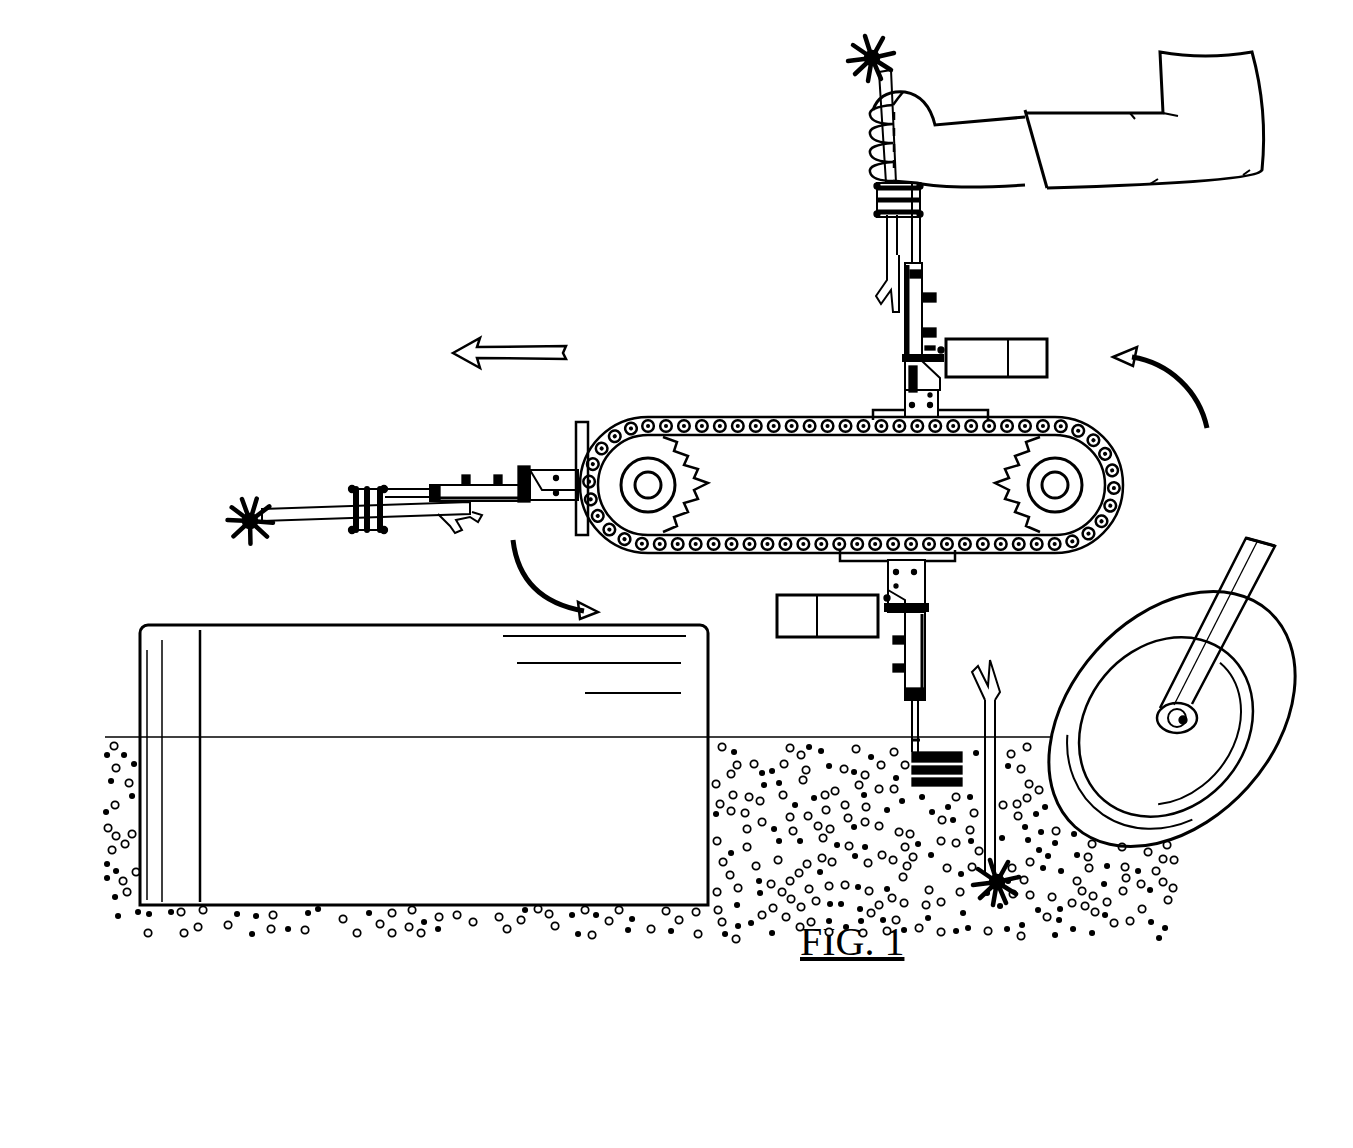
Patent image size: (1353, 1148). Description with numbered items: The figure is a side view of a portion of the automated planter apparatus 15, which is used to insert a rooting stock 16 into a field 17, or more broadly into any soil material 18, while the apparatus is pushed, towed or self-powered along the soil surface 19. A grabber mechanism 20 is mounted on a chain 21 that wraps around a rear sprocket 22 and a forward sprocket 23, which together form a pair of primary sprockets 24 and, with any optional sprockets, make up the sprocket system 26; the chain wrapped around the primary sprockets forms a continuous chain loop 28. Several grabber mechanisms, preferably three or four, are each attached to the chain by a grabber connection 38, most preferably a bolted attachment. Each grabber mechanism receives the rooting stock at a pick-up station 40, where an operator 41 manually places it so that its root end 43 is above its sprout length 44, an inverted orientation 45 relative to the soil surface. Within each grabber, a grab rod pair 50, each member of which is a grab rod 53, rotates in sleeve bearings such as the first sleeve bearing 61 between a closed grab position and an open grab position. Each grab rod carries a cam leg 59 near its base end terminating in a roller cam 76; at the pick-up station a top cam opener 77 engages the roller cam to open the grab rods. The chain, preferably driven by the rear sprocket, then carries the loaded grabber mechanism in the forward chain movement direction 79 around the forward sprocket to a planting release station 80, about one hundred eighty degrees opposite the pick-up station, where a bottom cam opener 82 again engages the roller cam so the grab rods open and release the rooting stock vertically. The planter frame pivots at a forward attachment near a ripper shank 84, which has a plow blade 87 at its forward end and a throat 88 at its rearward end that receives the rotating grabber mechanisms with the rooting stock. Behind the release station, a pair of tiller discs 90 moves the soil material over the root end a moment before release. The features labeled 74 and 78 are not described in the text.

The planter apparatus 15 is at (522, 246).
The rooting stock 16 is at (886, 178).
The field 17 is at (838, 748).
The soil material 18 is at (783, 746).
The soil surface 19 is at (740, 734).
The grabber mechanism 20 is at (707, 455).
The chain 21 is at (742, 418).
The rear sprocket 22 is at (1005, 474).
The forward sprocket 23 is at (696, 476).
The pair of primary sprockets 24 is at (1012, 460).
The sprocket system 26 is at (851, 444).
The continuous chain loop 28 is at (1138, 500).
The grabber connection 38 is at (930, 425).
The pick-up station 40 is at (627, 470).
The operator 41 is at (1088, 170).
The root end 43 is at (868, 72).
The sprout length 44 is at (890, 248).
The inverted orientation 45 is at (812, 148).
The grab rod pair 50 is at (875, 195).
The grab rod 53 is at (920, 236).
The cam leg 59 is at (905, 382).
The first sleeve bearing 61 is at (405, 487).
The direction of travel 74 is at (535, 350).
The roller cam 76 is at (908, 358).
The top cam opener 77 is at (1035, 340).
The pivot pin 78 is at (908, 388).
The forward chain movement direction 79 is at (1170, 380).
The planting release station 80 is at (872, 698).
The bottom cam opener 82 is at (778, 612).
The ripper shank 84 is at (427, 645).
The plow blade 87 is at (172, 640).
The throat 88 is at (714, 660).
The pair of tiller discs 90 is at (1128, 630).